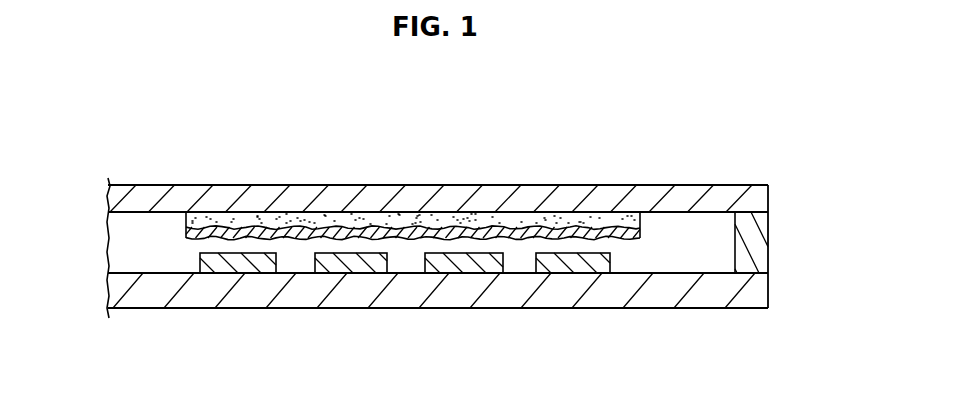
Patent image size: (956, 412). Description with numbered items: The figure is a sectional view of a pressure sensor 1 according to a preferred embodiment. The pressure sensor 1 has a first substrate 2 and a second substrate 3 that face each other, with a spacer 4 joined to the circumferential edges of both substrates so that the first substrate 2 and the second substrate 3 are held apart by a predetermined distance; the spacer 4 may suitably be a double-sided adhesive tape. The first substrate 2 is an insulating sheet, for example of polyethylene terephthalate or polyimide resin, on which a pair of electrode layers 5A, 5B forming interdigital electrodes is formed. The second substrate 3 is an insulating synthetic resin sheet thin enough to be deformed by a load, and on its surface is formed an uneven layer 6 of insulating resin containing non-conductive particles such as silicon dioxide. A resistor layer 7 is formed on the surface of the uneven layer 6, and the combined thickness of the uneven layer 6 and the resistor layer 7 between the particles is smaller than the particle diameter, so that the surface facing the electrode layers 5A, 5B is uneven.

The pressure sensor 1 is at (481, 124).
The first substrate 2 is at (538, 296).
The second substrate 3 is at (377, 196).
The spacer 4 is at (757, 235).
The electrode layer 5A is at (257, 268).
The electrode layer 5B is at (354, 268).
The uneven layer 6 is at (263, 216).
The resistor layer 7 is at (186, 234).